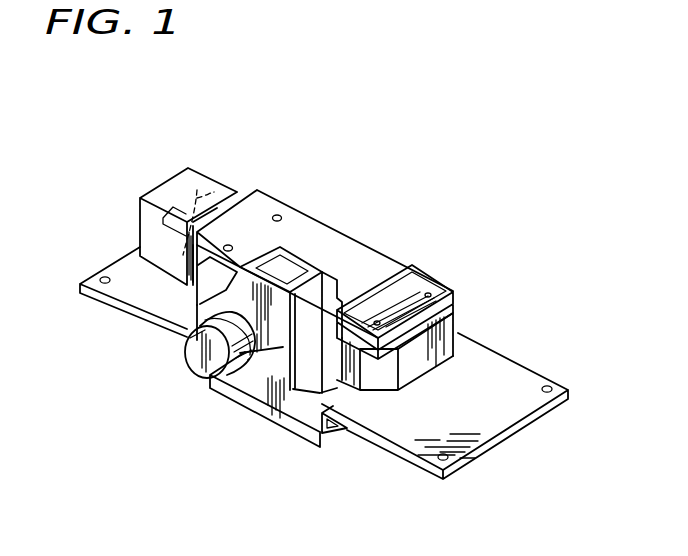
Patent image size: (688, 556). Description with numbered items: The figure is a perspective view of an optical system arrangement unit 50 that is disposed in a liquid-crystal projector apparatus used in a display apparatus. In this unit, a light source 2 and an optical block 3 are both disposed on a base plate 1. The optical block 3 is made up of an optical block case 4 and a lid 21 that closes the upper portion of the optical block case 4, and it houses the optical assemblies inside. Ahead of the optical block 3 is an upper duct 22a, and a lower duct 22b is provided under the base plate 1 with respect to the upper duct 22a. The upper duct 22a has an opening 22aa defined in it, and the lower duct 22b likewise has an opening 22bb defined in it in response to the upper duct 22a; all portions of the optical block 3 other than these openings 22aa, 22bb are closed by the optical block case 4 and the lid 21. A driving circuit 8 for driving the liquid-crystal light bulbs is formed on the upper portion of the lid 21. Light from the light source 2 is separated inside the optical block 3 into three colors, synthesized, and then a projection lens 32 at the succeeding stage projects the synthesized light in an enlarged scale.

The base plate 1 is at (500, 415).
The light source 2 is at (197, 190).
The optical block 3 is at (438, 361).
The optical block case 4 is at (422, 360).
The driving circuit 8 is at (361, 268).
The lid 21 is at (450, 288).
The upper duct 22a is at (278, 347).
The opening 22aa is at (286, 268).
The lower duct 22b is at (223, 388).
The opening 22bb is at (337, 438).
The projection lens 32 is at (187, 329).
The optical system arrangement unit 50 is at (78, 175).